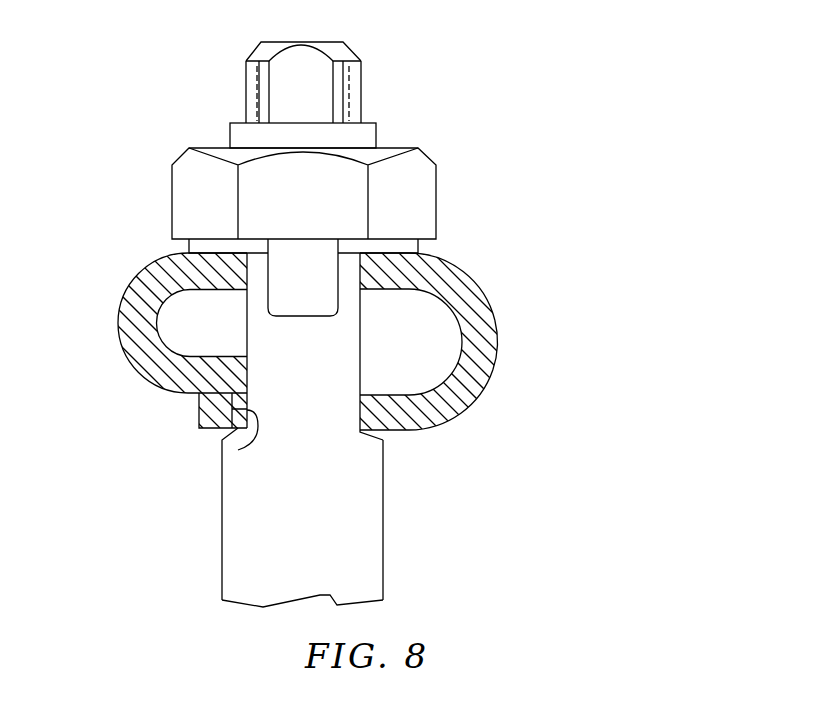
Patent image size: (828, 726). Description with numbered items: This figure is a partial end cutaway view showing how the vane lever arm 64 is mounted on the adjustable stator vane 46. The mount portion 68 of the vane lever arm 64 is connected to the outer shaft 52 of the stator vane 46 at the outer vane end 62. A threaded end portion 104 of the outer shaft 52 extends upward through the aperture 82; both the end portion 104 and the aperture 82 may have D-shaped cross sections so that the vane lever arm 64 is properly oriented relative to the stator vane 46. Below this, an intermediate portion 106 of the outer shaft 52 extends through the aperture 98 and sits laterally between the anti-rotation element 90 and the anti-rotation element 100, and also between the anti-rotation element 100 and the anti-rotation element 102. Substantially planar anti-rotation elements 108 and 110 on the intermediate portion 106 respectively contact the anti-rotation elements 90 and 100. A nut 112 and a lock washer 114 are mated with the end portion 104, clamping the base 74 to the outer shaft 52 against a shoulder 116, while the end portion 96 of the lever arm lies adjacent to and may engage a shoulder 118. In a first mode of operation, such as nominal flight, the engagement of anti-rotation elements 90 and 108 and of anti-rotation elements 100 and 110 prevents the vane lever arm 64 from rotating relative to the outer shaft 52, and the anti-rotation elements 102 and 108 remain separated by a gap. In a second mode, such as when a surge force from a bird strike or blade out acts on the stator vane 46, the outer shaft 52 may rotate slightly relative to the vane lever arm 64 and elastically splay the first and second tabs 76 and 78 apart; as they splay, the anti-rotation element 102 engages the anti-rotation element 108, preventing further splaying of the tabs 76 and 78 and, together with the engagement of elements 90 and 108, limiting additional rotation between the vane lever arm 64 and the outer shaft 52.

The stator vane 46 is at (220, 565).
The outer shaft 52 is at (383, 582).
The outer vane end 62 is at (307, 42).
The vane lever arm 64 is at (492, 392).
The mount portion 68 is at (497, 320).
The base 74 is at (207, 267).
The first tab 76 is at (115, 322).
The second tab 78 is at (498, 342).
The aperture 82 is at (360, 268).
The anti-rotation element 90 is at (247, 375).
The end portion 96 is at (200, 410).
The aperture 98 is at (365, 417).
The anti-rotation element 100 is at (358, 408).
The anti-rotation element 102 is at (238, 450).
The threaded end portion 104 is at (361, 87).
The intermediate portion 106 is at (360, 352).
The anti-rotation element 108 is at (128, 297).
The anti-rotation element 110 is at (360, 323).
The nut 112 is at (435, 178).
The lock washer 114 is at (420, 247).
The shoulder 116 is at (190, 280).
The shoulder 118 is at (383, 432).